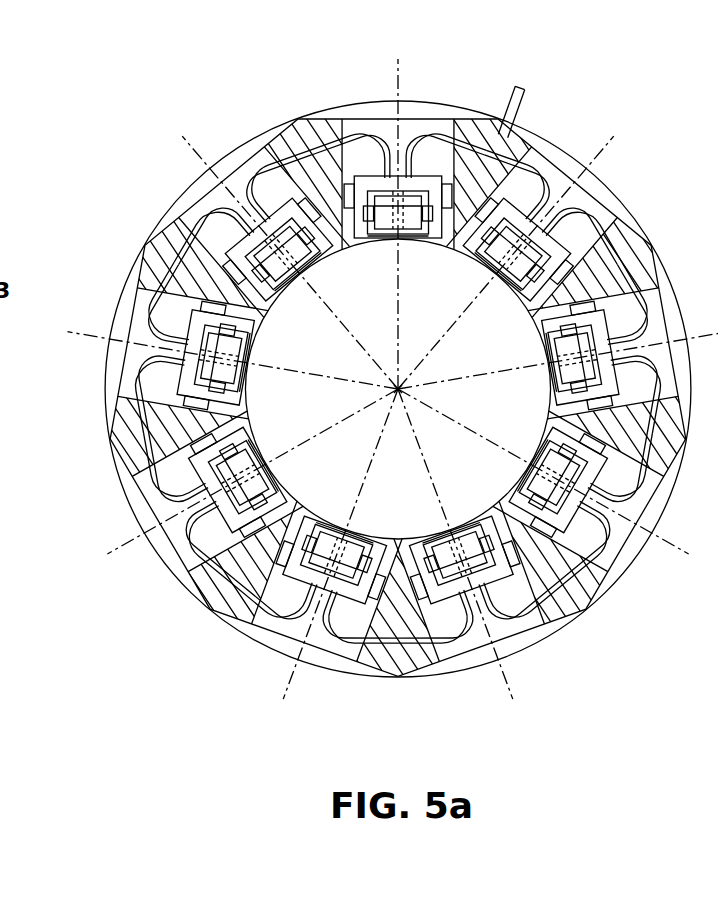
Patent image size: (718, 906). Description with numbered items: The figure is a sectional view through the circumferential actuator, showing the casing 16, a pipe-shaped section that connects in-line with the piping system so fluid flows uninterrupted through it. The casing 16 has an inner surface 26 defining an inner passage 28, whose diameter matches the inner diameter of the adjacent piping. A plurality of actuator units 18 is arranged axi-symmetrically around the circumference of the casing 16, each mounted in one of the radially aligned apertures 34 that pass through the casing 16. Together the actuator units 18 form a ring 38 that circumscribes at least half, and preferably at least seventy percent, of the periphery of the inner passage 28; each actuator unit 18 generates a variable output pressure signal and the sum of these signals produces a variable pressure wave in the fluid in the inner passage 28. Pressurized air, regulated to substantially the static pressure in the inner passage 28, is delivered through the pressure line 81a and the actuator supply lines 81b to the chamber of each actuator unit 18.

The casing 16 is at (633, 217).
The actuator unit 18 is at (437, 597).
The inner surface 26 is at (397, 540).
The inner passage 28 is at (446, 315).
The radially aligned aperture 34 is at (518, 187).
The ring of actuator units 38 is at (213, 632).
The pressure line 81a is at (522, 102).
The actuator supply line 81b is at (445, 140).